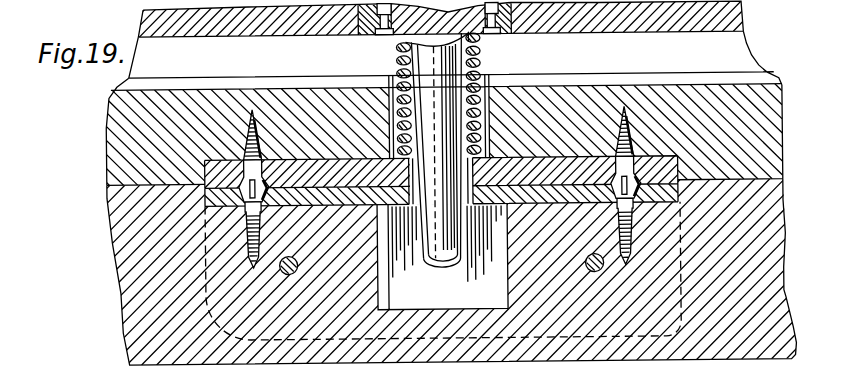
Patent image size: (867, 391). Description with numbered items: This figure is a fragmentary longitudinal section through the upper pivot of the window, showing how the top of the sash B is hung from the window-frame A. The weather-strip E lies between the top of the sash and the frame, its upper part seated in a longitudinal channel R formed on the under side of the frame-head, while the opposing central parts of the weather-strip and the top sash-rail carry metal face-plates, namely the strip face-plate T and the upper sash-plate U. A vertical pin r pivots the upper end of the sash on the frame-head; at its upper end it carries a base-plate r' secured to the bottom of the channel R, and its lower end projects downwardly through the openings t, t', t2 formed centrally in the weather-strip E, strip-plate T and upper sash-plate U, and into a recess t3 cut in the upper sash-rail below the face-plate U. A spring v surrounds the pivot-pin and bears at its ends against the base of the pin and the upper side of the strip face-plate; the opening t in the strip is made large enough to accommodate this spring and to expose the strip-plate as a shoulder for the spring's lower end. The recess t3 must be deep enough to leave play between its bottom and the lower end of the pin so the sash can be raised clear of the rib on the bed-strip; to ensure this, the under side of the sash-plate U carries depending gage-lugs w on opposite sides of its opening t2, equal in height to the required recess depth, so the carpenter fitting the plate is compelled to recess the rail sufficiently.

The window-frame A is at (737, 27).
The longitudinal channel R is at (227, 62).
The weather-strip E is at (780, 100).
The strip face-plate T is at (678, 163).
The upper sash-plate U is at (668, 193).
The sash B is at (770, 298).
The vertical pin r is at (441, 185).
The base-plate r' is at (459, 28).
The spring v is at (395, 60).
The opening in weather-strip t is at (484, 94).
The opening in strip-plate t' is at (437, 146).
The opening in upper sash-plate t2 is at (460, 227).
The recess t3 is at (507, 291).
The gage-lugs w is at (503, 288).